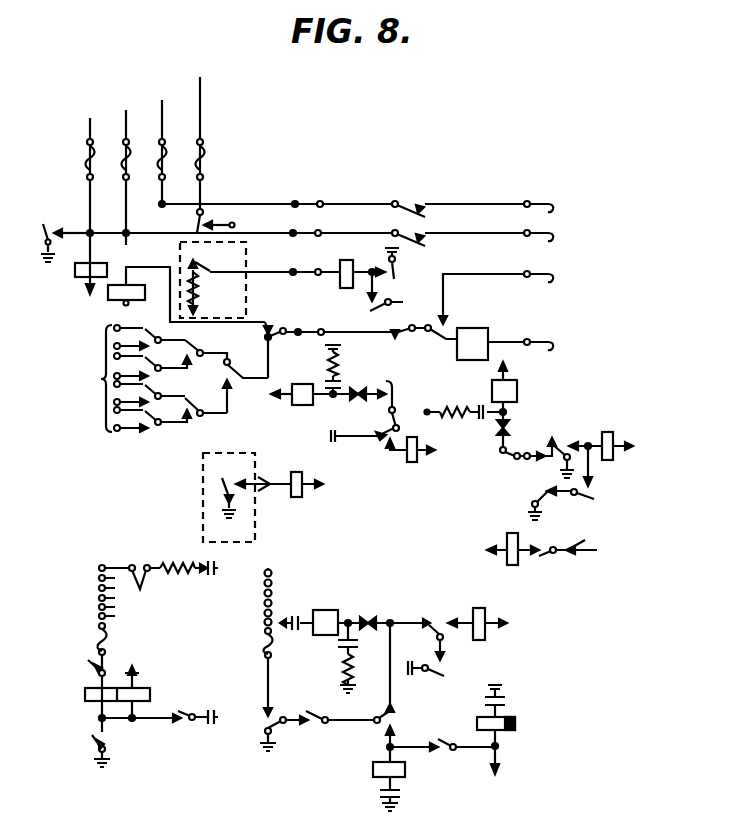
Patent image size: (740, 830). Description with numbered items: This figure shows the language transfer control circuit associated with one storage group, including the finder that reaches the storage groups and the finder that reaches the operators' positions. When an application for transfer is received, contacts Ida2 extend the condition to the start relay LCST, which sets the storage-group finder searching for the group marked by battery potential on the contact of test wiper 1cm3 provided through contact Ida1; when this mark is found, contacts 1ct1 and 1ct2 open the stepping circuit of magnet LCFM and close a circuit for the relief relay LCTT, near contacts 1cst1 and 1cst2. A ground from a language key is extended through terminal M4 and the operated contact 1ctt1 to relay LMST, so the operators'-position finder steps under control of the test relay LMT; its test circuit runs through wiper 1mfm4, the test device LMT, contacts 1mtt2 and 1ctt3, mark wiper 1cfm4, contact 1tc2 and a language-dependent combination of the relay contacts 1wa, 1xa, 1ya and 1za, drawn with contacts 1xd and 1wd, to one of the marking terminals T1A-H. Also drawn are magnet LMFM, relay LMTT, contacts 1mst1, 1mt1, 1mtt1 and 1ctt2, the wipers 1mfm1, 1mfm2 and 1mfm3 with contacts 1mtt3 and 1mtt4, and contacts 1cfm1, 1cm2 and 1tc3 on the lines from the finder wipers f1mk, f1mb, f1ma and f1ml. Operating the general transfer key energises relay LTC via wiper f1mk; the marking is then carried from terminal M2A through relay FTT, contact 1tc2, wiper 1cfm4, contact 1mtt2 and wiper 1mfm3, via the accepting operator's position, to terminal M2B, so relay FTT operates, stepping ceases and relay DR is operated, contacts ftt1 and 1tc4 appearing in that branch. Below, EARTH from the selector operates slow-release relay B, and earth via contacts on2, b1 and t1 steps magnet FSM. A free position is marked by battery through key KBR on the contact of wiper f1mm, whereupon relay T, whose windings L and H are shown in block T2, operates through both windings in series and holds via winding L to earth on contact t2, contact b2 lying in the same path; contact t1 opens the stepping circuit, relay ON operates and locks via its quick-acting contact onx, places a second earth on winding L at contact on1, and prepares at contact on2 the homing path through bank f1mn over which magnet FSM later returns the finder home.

The wiper f1mk is at (70, 202).
The fuse f1mb is at (111, 171).
The fuse f1ma is at (147, 144).
The wiper f1ml is at (185, 139).
The contact 1tc3 is at (184, 221).
The marking terminal M2B is at (237, 225).
The contact 1cfm1 is at (310, 194).
The contact 1cm2 is at (305, 224).
The contact 1mtt3 is at (408, 200).
The contact 1mtt4 is at (408, 229).
The terminal 1mfm1 is at (531, 197).
The terminal 1mfm2 is at (531, 226).
The wiper lmfm3 1mfm3 is at (498, 288).
The wiper lmfm4 1mfm4 is at (523, 335).
The relay LTC is at (91, 270).
The relay T is at (77, 302).
The relay FTT is at (186, 294).
The marking terminal M2A is at (129, 314).
The marking terminals T1A to T1H T1A-H is at (90, 378).
The contact lxa 1xa is at (186, 341).
The contact 1xd is at (168, 361).
The contact lza 1za is at (245, 386).
The contact lwa 1wa is at (165, 389).
The contact lya 1ya is at (206, 406).
The contact 1wd is at (168, 415).
The contact lda1 Ida1 is at (213, 280).
The test wiper lcfm3 1cm3 is at (305, 263).
The contact 1cst2 is at (411, 263).
The contact 1ct1 is at (368, 307).
The contact ltc2 1tc2 is at (278, 343).
The mark wiper lcfm4 1cfm4 is at (320, 322).
The contact lmtt2 1mtt2 is at (420, 324).
The contact lctt3 1ctt3 is at (405, 350).
The test relay LMT is at (472, 335).
The magnet LCFM is at (293, 404).
The contact 1cst1 is at (368, 399).
The contact 1ct2 is at (365, 441).
The relief relay LCTT is at (410, 458).
The relay LMFM is at (528, 382).
The contact 1mst1 is at (508, 454).
The contact 1mt1 is at (564, 451).
The relay LMTT is at (601, 451).
The contact 1mtt1 is at (594, 495).
The contact 1ctt2 is at (528, 496).
The relay LMST is at (512, 541).
The contact lctt1 1ctt1 is at (563, 561).
The terminal M4 is at (571, 539).
The start relay LCST is at (279, 476).
The contacts lda2 Ida2 is at (229, 497).
The key KBR is at (160, 578).
The wiper f1mm is at (124, 617).
The contact b2 is at (86, 664).
The windings L and H of relay T T2 is at (122, 686).
The contact on1 is at (198, 710).
The contact t2 is at (108, 744).
The homing bank f1mn is at (250, 642).
The contact on2 is at (272, 732).
The contact b1 is at (340, 709).
The contact t1 is at (393, 675).
The contact onx is at (461, 738).
The relay ON is at (403, 786).
The magnet FSM is at (355, 614).
The contact ftt1 is at (429, 630).
The contact 1tc4 is at (444, 668).
The relay DR is at (479, 623).
The slow-release relay B is at (502, 729).
The earth from selector S1 EARTH is at (530, 794).